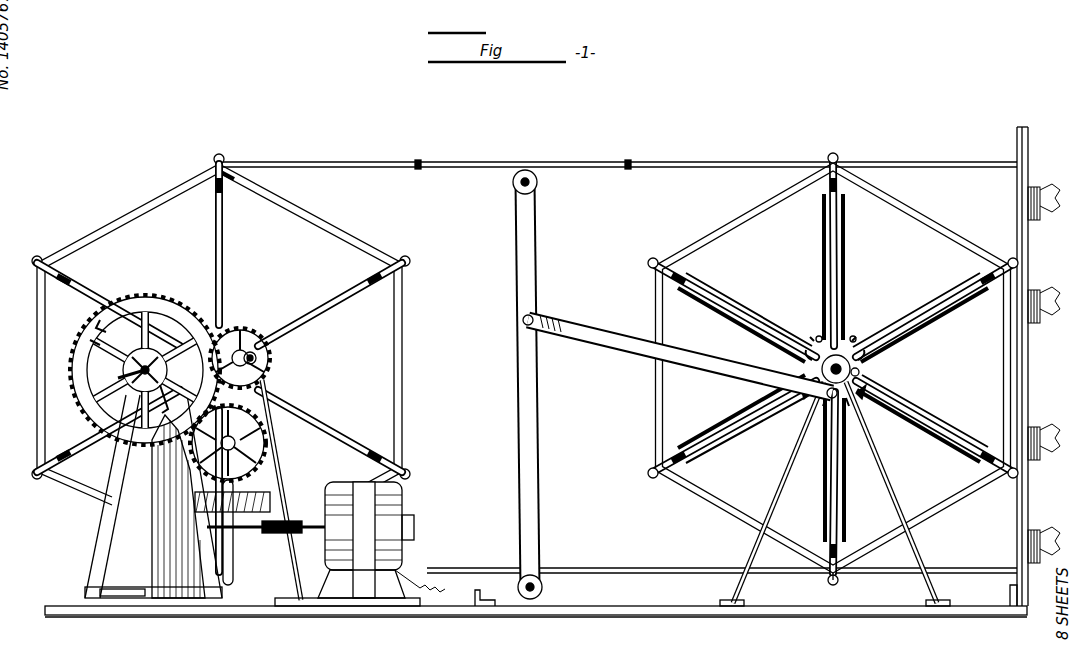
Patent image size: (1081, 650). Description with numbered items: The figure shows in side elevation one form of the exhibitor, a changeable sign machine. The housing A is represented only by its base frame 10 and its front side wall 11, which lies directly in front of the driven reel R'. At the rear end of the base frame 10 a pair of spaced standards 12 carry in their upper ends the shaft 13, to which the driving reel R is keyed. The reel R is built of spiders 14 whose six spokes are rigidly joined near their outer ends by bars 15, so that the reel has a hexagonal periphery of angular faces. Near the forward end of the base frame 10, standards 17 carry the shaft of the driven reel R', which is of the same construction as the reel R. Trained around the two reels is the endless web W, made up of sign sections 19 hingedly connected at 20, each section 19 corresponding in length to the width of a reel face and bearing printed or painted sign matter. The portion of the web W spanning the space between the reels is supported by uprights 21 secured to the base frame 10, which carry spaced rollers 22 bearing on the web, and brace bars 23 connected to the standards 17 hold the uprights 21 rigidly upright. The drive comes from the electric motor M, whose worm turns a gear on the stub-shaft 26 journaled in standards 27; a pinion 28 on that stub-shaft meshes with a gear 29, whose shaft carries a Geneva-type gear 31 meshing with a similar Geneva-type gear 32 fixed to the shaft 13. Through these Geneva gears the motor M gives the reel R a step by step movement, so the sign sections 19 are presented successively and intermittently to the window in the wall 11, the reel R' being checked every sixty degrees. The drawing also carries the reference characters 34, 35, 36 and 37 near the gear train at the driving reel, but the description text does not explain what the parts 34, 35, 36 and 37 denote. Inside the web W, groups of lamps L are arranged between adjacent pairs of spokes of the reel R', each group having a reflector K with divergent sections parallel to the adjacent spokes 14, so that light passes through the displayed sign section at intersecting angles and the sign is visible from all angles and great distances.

The base frame 10 is at (506, 608).
The front side wall 11 is at (1028, 578).
The spaced standards 12 is at (282, 520).
The shaft 13 is at (860, 372).
The spiders 14 is at (216, 241).
The bars 15 is at (122, 210).
The standards 17 is at (775, 466).
The sections 19 is at (462, 162).
The hinge connections 20 is at (420, 162).
The uprights 21 is at (541, 397).
The rollers 22 is at (538, 186).
The brace bars 23 is at (636, 356).
The stub-shaft 26 is at (160, 445).
The standards 27 is at (134, 600).
The pinion 28 is at (264, 468).
The gear 29 is at (145, 295).
The Geneva-type gear 31 is at (165, 320).
The Geneva-type gear 32 is at (245, 333).
The gear shaft 34 is at (118, 378).
The pawl 35 is at (96, 328).
The pawl arm 36 is at (162, 410).
The gear pin 37 is at (266, 360).
The housing A is at (630, 610).
The reflector K is at (822, 306).
The lamps L is at (857, 336).
The electric motor M is at (408, 508).
The driving reel R is at (221, 333).
The driven reel R' is at (833, 369).
The endless web W is at (348, 162).